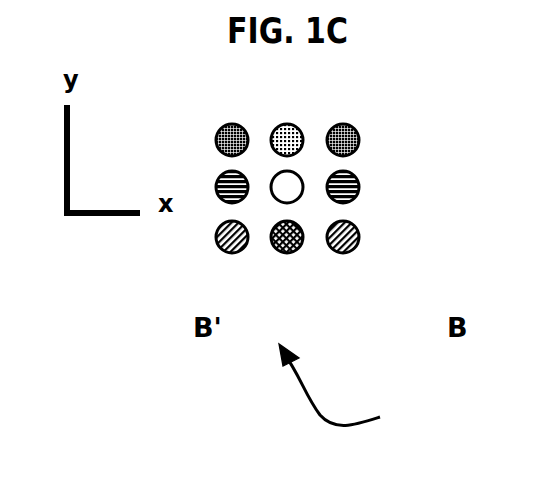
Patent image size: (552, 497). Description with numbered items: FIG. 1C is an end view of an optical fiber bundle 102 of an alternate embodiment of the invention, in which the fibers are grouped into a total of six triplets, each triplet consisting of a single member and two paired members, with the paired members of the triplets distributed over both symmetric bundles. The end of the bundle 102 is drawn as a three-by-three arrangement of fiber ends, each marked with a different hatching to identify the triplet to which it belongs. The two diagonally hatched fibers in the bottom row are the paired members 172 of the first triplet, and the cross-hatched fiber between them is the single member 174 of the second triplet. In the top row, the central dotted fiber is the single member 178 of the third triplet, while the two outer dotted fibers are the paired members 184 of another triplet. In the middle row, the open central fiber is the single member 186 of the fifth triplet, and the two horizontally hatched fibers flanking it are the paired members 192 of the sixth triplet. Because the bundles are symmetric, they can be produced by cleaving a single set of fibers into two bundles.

The bundle 102 is at (345, 384).
The paired members 172 is at (337, 225).
The single member 174 is at (288, 250).
The single member 178 is at (287, 135).
The paired members 184 is at (248, 141).
The single member 186 is at (287, 187).
The paired members 192 is at (248, 192).